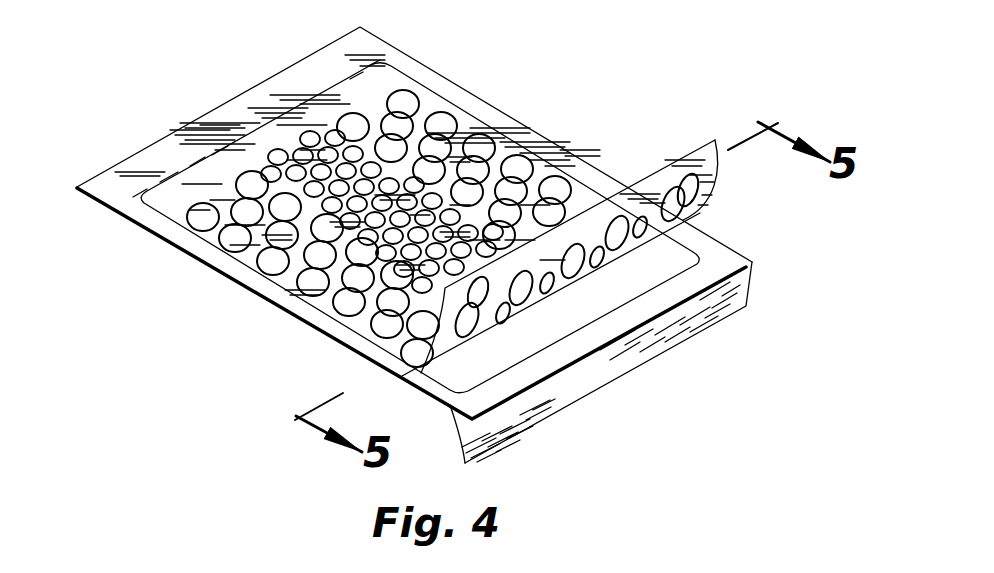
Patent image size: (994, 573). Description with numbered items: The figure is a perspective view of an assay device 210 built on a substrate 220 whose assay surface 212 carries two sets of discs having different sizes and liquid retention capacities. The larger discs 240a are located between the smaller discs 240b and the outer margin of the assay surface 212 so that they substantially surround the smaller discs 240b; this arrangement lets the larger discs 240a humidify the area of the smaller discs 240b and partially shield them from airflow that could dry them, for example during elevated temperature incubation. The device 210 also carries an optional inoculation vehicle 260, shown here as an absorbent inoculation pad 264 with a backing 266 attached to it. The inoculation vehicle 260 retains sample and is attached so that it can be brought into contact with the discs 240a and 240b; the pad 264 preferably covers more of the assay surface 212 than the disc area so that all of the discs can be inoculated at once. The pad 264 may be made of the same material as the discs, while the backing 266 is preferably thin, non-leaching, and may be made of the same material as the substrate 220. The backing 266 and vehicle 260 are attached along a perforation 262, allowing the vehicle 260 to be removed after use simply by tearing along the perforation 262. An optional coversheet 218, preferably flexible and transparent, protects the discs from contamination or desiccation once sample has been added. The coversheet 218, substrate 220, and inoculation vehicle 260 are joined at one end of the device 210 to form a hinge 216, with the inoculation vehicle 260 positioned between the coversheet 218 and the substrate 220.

The assay device 210 is at (432, 242).
The assay surface 212 is at (463, 203).
The hinge 216 is at (137, 187).
The coversheet 218 is at (530, 418).
The substrate 220 is at (684, 146).
The larger discs 240a is at (259, 266).
The smaller discs 240b is at (307, 131).
The inoculation vehicle 260 is at (586, 362).
The perforation 262 is at (203, 160).
The absorbent inoculation pad 264 is at (468, 385).
The backing 266 is at (717, 287).